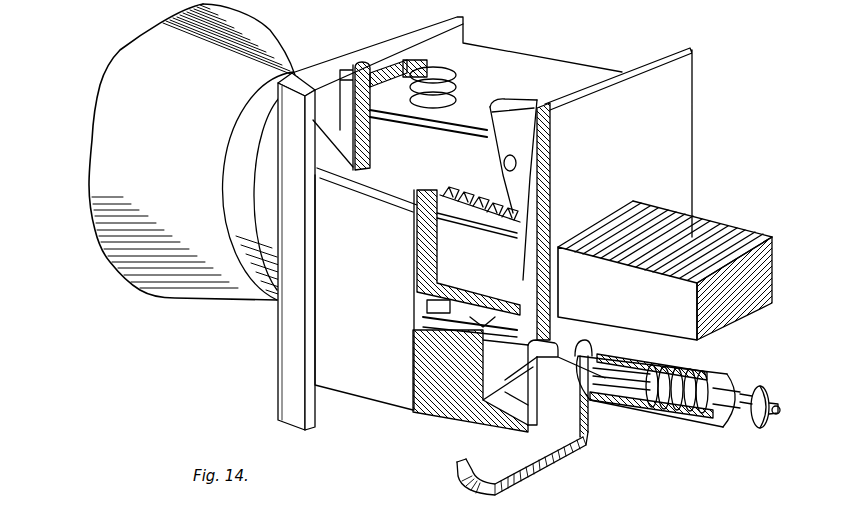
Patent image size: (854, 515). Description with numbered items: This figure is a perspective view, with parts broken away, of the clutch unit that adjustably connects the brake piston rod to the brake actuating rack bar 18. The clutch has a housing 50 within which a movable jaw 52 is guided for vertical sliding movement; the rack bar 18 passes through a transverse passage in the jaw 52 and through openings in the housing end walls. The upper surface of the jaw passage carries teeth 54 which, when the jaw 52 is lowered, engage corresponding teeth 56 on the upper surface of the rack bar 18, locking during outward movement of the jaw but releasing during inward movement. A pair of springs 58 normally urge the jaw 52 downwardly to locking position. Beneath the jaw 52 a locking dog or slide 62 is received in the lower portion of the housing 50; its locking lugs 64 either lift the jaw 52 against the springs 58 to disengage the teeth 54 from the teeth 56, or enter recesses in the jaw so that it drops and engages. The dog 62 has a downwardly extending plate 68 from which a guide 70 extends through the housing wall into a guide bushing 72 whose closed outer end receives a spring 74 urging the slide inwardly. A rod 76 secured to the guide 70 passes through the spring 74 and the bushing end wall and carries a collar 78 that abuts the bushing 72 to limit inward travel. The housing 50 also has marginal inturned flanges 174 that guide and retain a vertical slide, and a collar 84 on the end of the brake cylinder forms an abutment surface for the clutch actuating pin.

The rack bar 18 is at (747, 297).
The housing 50 is at (513, 68).
The movable jaw 52 is at (381, 183).
The teeth 54 is at (447, 190).
The teeth 56 is at (697, 227).
The springs 58 is at (447, 65).
The locking dog 62 is at (452, 327).
The locking lugs 64 is at (488, 330).
The plate 68 is at (542, 392).
The guide 70 is at (617, 373).
The guide bushing 72 is at (640, 407).
The spring 74 is at (673, 417).
The rod 76 is at (735, 418).
The collar 78 is at (760, 423).
The collar 84 is at (256, 275).
The inturned flanges 174 is at (298, 299).